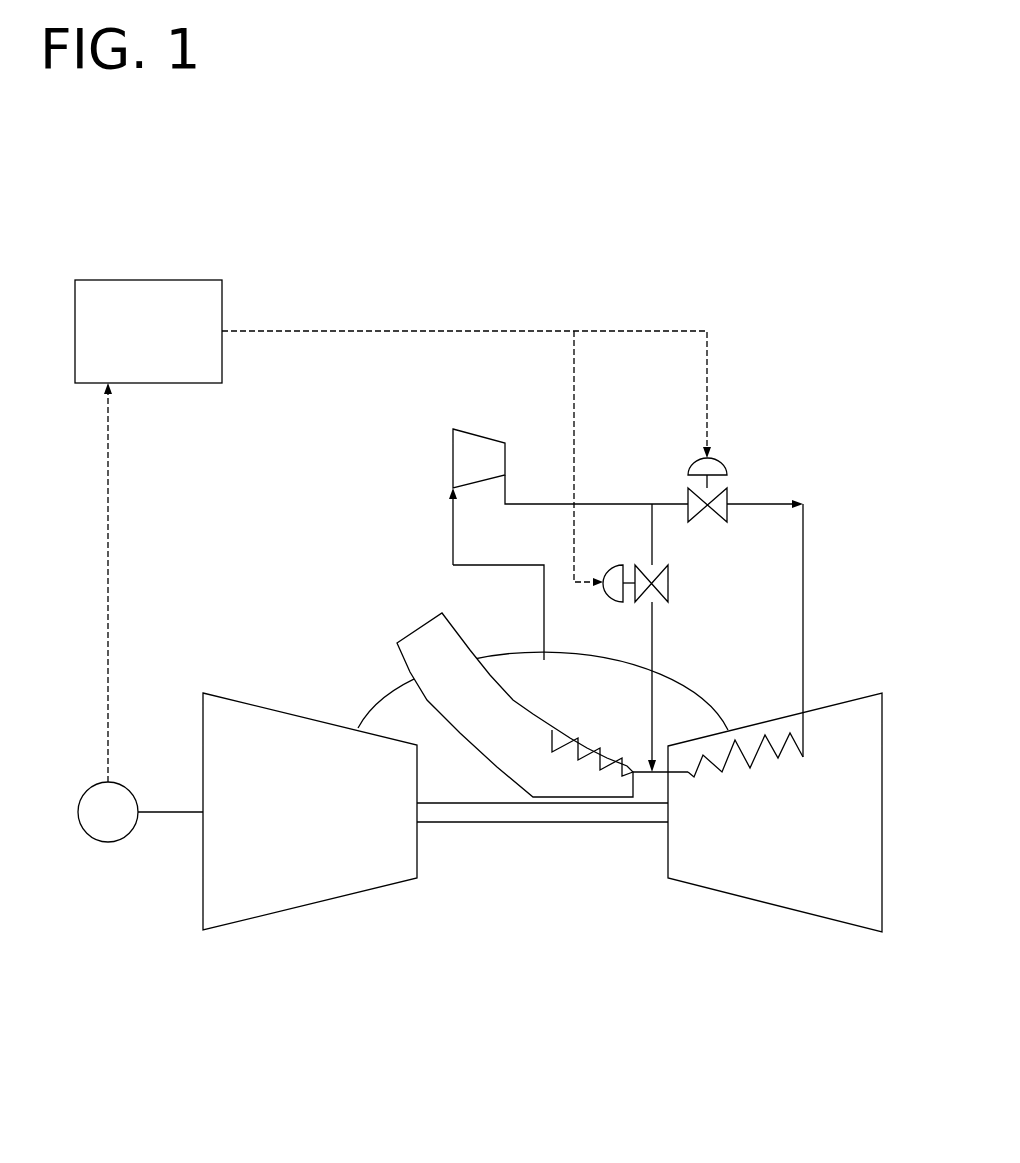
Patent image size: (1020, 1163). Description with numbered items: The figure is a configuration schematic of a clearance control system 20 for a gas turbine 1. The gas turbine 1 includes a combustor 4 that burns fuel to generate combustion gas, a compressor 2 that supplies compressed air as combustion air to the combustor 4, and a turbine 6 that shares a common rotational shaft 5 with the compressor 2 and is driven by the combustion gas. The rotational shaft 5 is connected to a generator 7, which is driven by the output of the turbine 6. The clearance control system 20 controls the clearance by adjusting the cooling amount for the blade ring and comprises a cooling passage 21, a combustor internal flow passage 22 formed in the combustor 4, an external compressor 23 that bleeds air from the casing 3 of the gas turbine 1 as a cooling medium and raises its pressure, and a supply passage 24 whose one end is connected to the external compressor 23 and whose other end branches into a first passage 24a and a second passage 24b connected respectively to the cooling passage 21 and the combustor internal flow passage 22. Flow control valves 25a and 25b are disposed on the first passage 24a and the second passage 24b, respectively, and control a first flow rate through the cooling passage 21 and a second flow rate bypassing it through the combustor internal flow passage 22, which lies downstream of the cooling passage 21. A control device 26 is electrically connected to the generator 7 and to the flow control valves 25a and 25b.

The gas turbine 1 is at (342, 565).
The compressor 2 is at (307, 905).
The casing 3 is at (703, 688).
The combustor 4 is at (413, 628).
The rotational shaft 5 is at (523, 822).
The turbine 6 is at (787, 908).
The generator 7 is at (113, 843).
The clearance control system 20 is at (828, 490).
The cooling passage 21 is at (770, 745).
The combustor internal flow passage 22 is at (577, 735).
The external compressor 23 is at (453, 445).
The supply passage 24 is at (608, 504).
The first passage 24a is at (805, 560).
The second passage 24b is at (655, 543).
The flow control valve 25a is at (720, 460).
The flow control valve 25b is at (669, 592).
The control device 26 is at (135, 280).